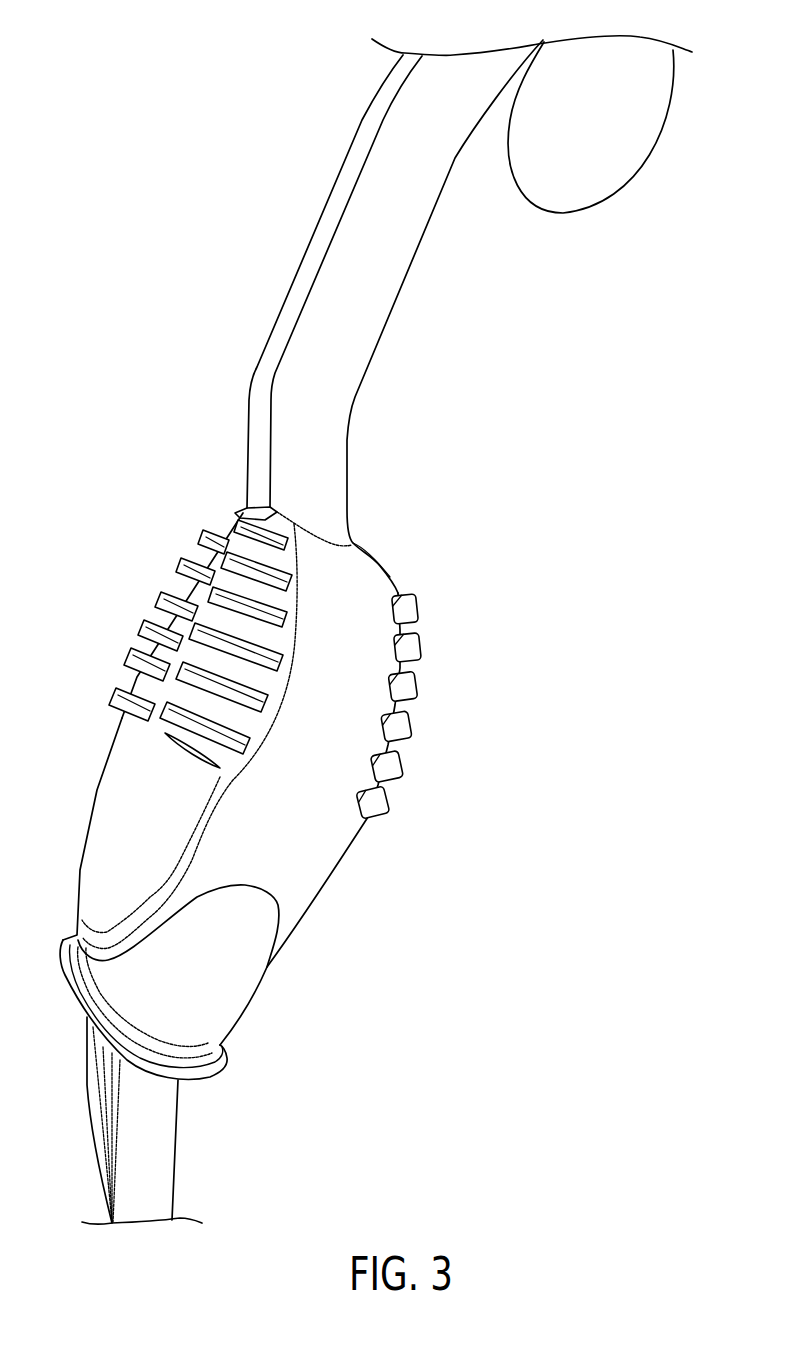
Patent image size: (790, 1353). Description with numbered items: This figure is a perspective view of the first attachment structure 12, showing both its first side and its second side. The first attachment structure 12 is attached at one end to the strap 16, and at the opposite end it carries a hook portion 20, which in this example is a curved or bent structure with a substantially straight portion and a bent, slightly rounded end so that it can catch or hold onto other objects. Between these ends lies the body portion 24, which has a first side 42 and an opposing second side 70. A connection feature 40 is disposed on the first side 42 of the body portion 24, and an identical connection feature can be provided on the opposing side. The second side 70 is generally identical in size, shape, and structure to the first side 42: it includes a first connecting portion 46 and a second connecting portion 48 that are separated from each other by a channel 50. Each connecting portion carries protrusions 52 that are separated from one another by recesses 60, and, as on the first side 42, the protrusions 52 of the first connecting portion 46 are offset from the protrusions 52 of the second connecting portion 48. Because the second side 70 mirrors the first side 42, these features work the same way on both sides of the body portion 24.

The first attachment structure 12 is at (123, 89).
The strap 16 is at (173, 1157).
The hook portion 20 is at (623, 177).
The body portion 24 is at (378, 587).
The connection feature 40 is at (192, 516).
The first side 42 is at (325, 890).
The first connecting portion 46 is at (128, 723).
The second connecting portion 48 is at (200, 772).
The channel 50 is at (157, 730).
The protrusions 52 is at (167, 593).
The recesses 60 is at (165, 615).
The second side 70 is at (87, 830).